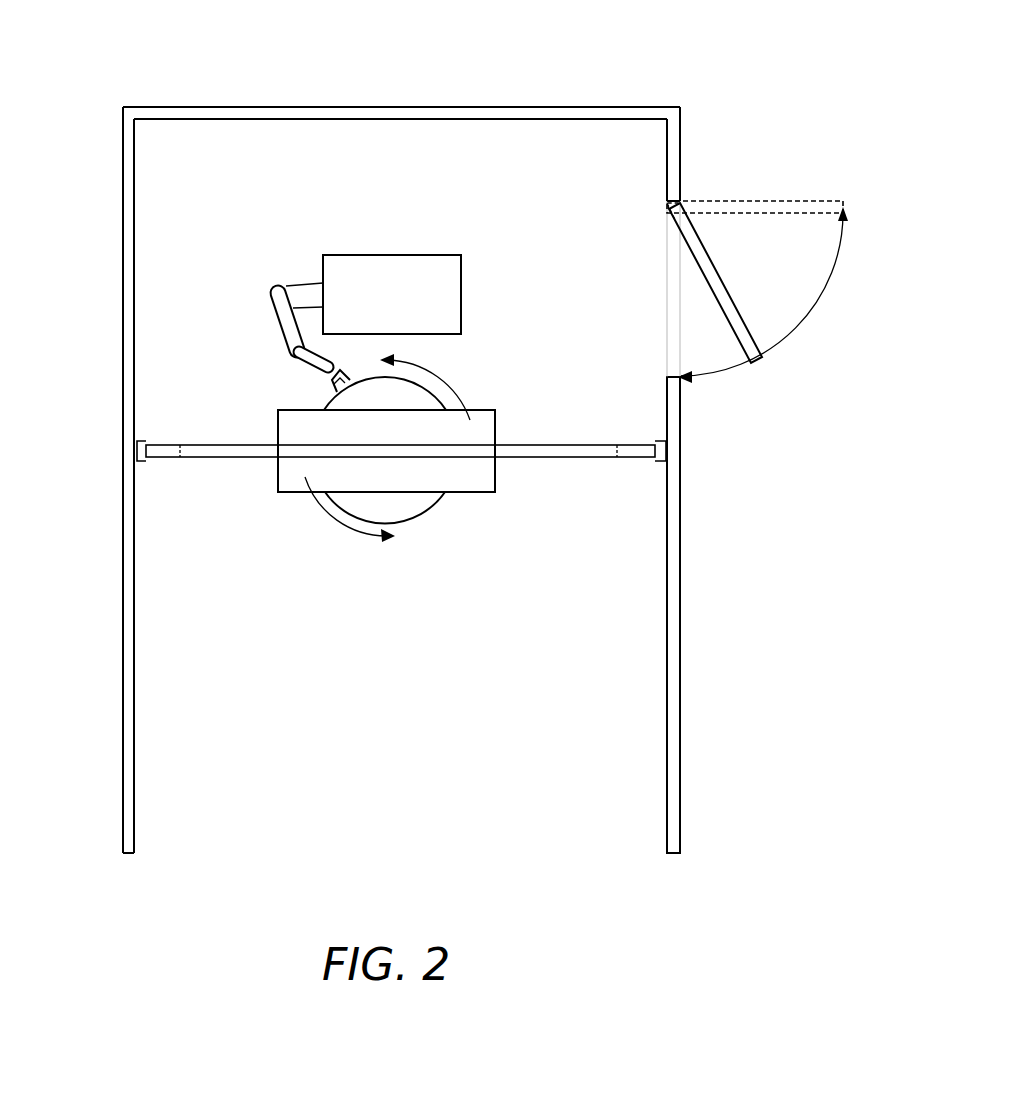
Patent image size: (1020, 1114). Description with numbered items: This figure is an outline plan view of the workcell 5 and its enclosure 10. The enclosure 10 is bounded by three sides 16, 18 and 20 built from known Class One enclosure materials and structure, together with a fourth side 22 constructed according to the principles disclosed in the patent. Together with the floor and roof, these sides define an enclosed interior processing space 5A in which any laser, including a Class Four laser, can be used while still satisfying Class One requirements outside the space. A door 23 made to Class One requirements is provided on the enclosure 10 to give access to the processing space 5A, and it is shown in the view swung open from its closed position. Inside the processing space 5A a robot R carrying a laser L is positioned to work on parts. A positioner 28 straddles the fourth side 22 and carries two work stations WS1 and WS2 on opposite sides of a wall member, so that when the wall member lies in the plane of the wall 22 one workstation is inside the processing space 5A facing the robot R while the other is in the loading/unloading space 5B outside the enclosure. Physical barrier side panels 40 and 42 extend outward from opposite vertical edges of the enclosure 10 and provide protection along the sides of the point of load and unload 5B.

The workcell 5 is at (88, 310).
The enclosure 10 is at (631, 107).
The side 16 is at (124, 191).
The side 18 is at (404, 107).
The side 20 is at (680, 178).
The fourth side 22 is at (200, 452).
The door 23 is at (735, 286).
The positioner 28 is at (421, 500).
The physical barrier side panel 40 is at (123, 643).
The physical barrier side panel 42 is at (680, 596).
The interior processing space 5A is at (412, 199).
The loading/unloading space 5B is at (400, 629).
The work station WS1 is at (488, 418).
The work station WS2 is at (292, 476).
The robot R is at (392, 294).
The laser L is at (330, 376).